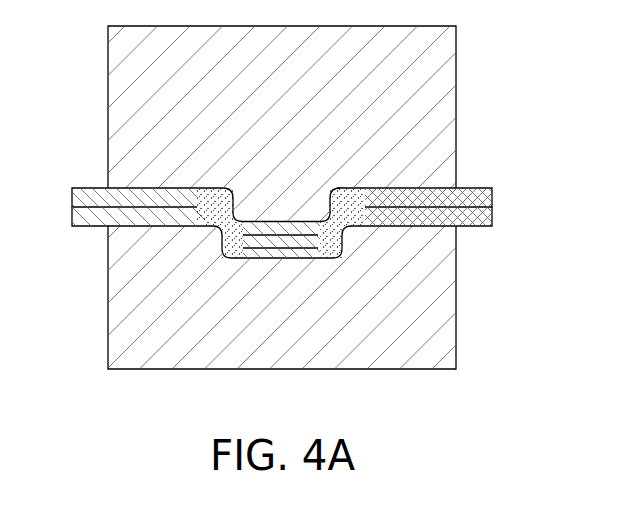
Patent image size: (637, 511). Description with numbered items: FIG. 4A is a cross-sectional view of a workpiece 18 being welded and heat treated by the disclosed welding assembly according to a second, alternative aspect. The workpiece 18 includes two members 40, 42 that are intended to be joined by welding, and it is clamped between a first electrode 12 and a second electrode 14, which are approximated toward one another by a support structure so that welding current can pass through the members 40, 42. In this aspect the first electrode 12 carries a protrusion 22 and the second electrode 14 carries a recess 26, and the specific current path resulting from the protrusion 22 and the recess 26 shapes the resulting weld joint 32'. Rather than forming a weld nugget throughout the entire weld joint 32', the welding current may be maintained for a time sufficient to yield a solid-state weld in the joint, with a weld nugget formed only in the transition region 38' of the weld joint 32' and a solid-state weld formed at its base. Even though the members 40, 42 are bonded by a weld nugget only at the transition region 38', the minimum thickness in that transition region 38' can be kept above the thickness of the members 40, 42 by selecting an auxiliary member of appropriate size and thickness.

The first electrode 12 is at (456, 48).
The second electrode 14 is at (456, 312).
The workpiece 18 is at (511, 134).
The protrusion 22 is at (337, 210).
The recess 26 is at (228, 258).
The weld joint 32' is at (291, 243).
The transition region 38' is at (281, 202).
The member 40 is at (492, 194).
The member 42 is at (492, 220).